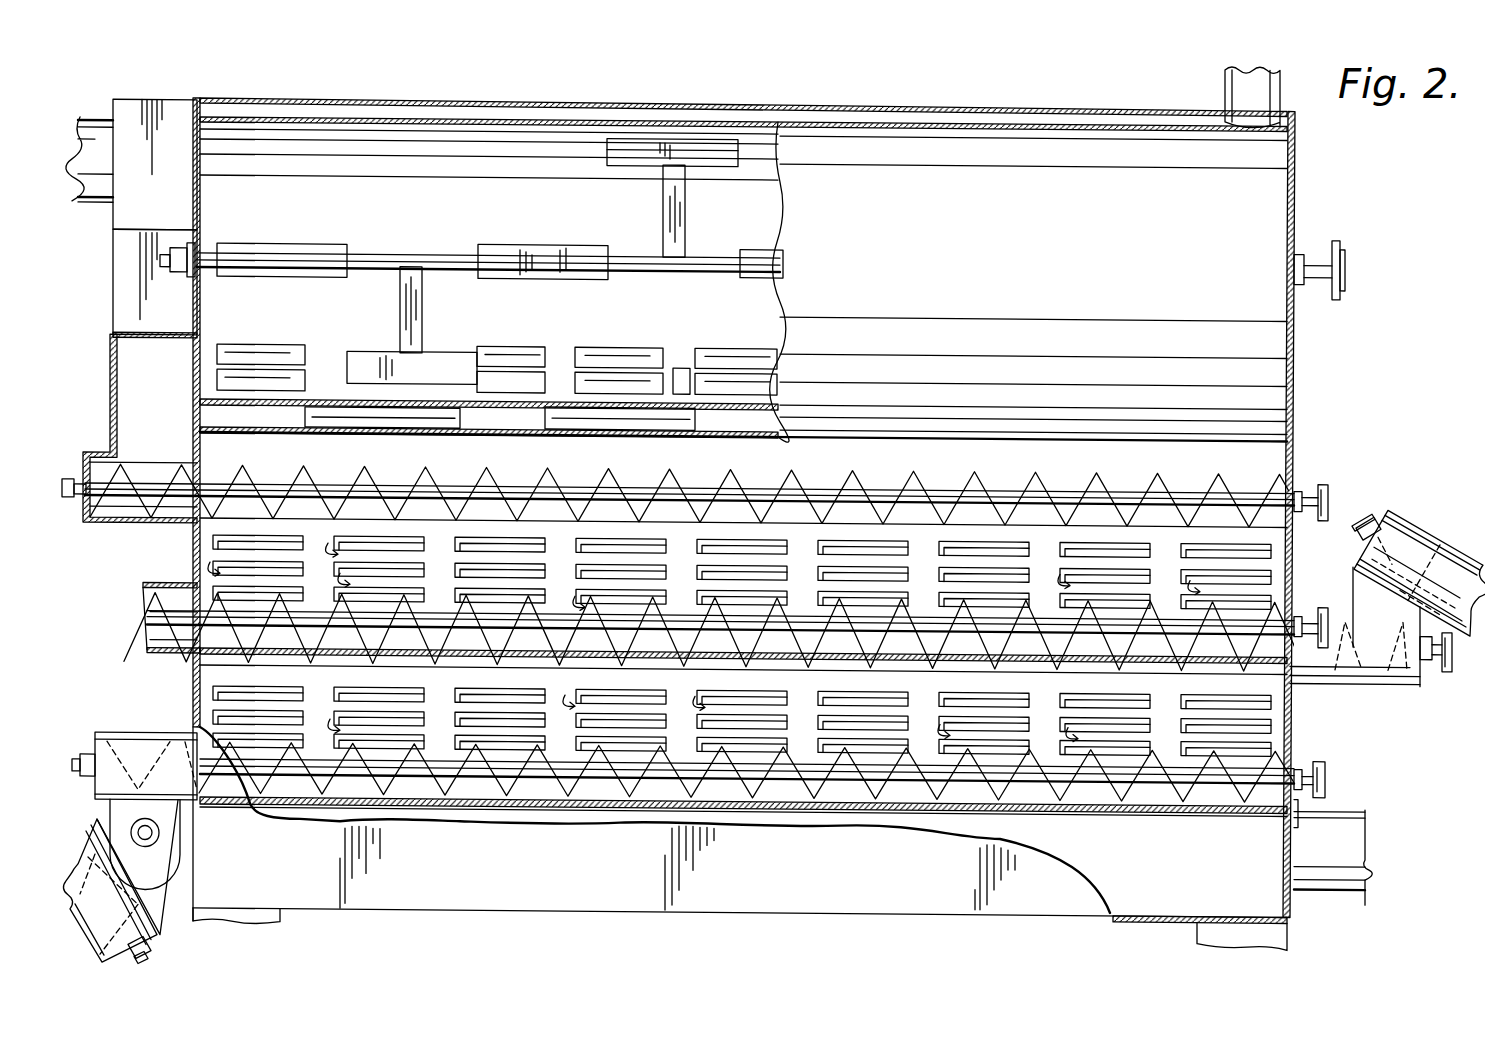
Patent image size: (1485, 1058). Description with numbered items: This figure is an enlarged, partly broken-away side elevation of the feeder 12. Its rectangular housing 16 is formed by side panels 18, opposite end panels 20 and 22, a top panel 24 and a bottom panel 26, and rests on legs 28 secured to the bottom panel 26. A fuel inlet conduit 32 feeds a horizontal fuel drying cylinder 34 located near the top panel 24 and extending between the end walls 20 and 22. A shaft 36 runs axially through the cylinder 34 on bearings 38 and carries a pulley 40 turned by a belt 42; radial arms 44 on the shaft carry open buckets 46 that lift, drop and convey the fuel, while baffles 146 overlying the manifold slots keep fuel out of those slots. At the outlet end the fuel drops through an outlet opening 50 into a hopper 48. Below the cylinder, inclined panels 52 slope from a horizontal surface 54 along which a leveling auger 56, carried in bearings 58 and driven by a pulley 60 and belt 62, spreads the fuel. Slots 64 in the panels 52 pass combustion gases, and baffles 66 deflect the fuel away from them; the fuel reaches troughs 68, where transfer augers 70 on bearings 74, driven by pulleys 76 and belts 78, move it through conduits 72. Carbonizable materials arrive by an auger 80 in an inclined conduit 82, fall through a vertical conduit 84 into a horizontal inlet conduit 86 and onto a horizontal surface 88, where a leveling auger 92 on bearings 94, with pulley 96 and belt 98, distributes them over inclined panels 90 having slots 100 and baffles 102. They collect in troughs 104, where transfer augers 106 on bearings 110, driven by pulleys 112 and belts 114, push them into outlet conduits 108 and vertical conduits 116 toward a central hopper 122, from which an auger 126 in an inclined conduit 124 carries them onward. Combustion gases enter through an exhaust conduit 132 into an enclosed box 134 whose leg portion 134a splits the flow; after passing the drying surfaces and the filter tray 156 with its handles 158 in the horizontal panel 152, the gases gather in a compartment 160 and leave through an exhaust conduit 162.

The feeder 12 is at (1377, 192).
The feeder housing 16 is at (967, 93).
The side panels 18 is at (645, 896).
The end panel 20 is at (1290, 383).
The end panel 22 is at (194, 316).
The top panel 24 is at (548, 100).
The bottom panel 26 is at (1115, 910).
The legs 28 is at (282, 914).
The fuel inlet conduit 32 is at (1225, 81).
The fuel drying cylinder 34 is at (1278, 216).
The shaft 36 is at (716, 252).
The bearings 38 is at (190, 276).
The pulley 40 is at (1342, 282).
The belt 42 is at (1346, 248).
The arms 44 is at (660, 212).
The buckets 46 is at (607, 152).
The hopper 48 is at (108, 382).
The outlet opening 50 is at (194, 360).
The inclined panels 52 is at (686, 542).
The horizontal surface 54 is at (624, 518).
The leveling auger 56 is at (548, 479).
The bearings 58 is at (72, 502).
The pulley 60 is at (1328, 487).
The belt 62 is at (1325, 475).
The slots 64 is at (530, 559).
The baffles 66 is at (405, 538).
The trough 68 is at (1262, 651).
The transfer auger 70 is at (712, 622).
The conduit 72 is at (168, 583).
The bearing 74 is at (1299, 606).
The pulleys 76 is at (1328, 612).
The belts 78 is at (1323, 598).
The auger 80 is at (1408, 513).
The inclined conduit 82 is at (1392, 501).
The vertical conduit 84 is at (1355, 558).
The inlet conduit 86 is at (1410, 678).
The horizontal surface 88 is at (925, 658).
The inclined panels 90 is at (800, 611).
The leveling auger 92 is at (440, 654).
The bearings 94 is at (1426, 651).
The pulley 96 is at (1448, 659).
The belt 98 is at (1453, 641).
The slots 100 is at (423, 702).
The baffles 102 is at (582, 689).
The trough 104 is at (1185, 800).
The transfer auger 106 is at (1045, 797).
The outlet conduits 108 is at (138, 734).
The bearings 110 is at (88, 760).
The pulley 112 is at (1326, 771).
The belt 114 is at (1326, 753).
The vertical conduits 116 is at (178, 814).
The central hopper 122 is at (168, 878).
The inclined conduit 124 is at (135, 962).
The auger 126 is at (150, 936).
The exhaust conduit 132 is at (110, 120).
The enclosed box 134 is at (157, 108).
The leg portion 134a is at (118, 284).
The baffles 146 is at (292, 366).
The horizontal panel 152 is at (875, 810).
The tray 156 is at (1292, 796).
The handles 158 is at (1330, 802).
The compartment 160 is at (1187, 906).
The exhaust conduit 162 is at (1365, 831).